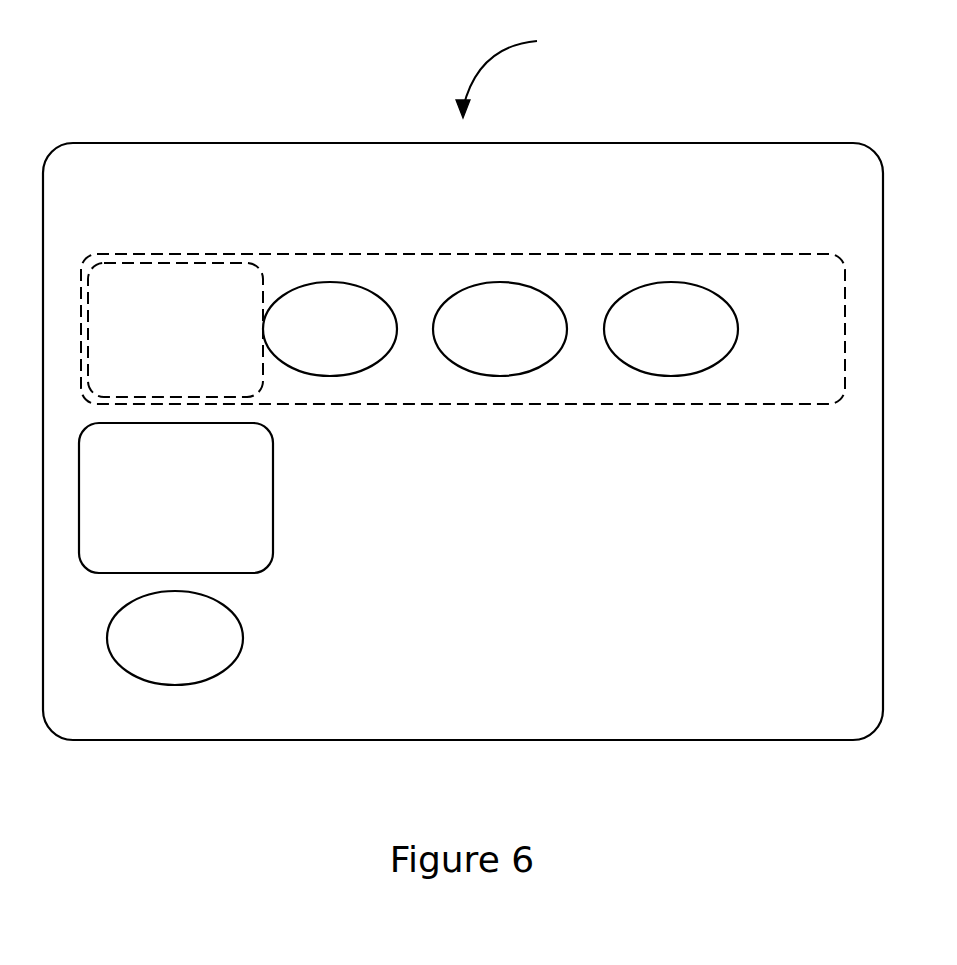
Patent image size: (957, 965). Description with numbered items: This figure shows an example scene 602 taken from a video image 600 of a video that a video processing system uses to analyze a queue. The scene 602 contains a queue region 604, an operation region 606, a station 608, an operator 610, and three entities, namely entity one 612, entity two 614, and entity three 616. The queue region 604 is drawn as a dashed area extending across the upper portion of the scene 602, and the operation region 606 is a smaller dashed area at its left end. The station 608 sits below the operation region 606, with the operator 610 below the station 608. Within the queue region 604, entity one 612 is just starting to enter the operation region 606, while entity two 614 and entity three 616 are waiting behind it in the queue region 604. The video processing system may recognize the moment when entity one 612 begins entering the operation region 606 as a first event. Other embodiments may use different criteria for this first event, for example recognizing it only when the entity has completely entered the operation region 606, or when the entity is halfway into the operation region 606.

The video image 600 is at (521, 73).
The scene 602 is at (828, 694).
The queue region 604 is at (765, 382).
The operation region 606 is at (154, 343).
The station 608 is at (154, 512).
The operator 610 is at (154, 662).
The entity 1 612 is at (309, 370).
The entity 2 614 is at (479, 370).
The entity 3 616 is at (650, 370).